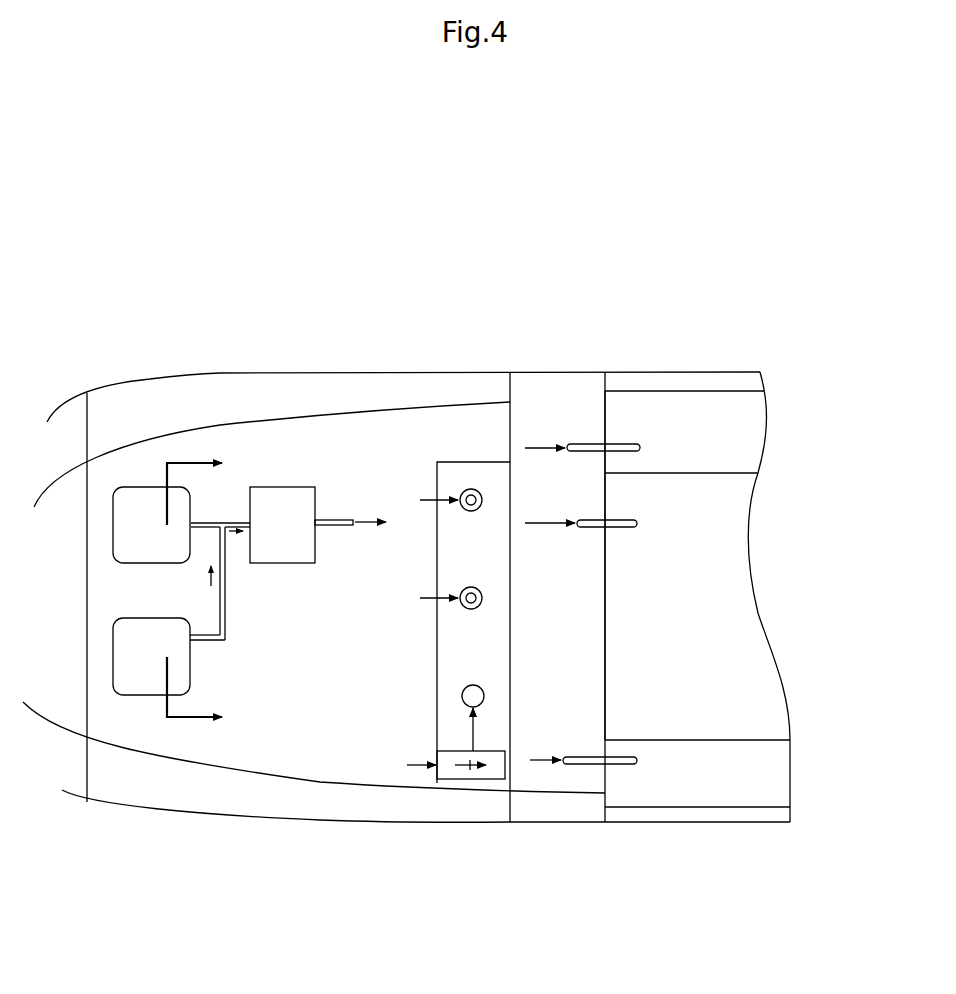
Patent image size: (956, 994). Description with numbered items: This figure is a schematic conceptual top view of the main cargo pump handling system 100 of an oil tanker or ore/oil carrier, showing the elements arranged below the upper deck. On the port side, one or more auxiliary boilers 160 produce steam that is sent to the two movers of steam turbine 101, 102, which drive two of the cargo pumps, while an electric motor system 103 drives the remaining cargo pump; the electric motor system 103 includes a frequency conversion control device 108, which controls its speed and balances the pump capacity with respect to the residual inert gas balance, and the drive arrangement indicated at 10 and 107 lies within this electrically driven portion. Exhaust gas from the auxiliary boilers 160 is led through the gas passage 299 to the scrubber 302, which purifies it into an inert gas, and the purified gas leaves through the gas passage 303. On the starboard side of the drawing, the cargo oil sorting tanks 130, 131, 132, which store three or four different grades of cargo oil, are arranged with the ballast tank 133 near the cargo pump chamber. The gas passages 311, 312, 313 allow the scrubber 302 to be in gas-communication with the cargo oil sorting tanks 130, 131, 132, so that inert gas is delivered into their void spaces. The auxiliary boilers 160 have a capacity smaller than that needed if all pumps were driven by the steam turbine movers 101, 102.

The main cargo pump handling system 100 is at (457, 360).
The process unit 10 is at (410, 636).
The mover of steam turbine 101 is at (472, 488).
The mover of steam turbine 102 is at (472, 610).
The electric motor system 103 is at (462, 696).
The purge gas flow arrow 107 is at (475, 770).
The frequency conversion control device 108 is at (455, 775).
The cargo oil sorting tank 130 is at (722, 418).
The cargo oil sorting tank 131 is at (740, 772).
The cargo oil sorting tank 132 is at (710, 547).
The ballast tank 133 is at (697, 386).
The auxiliary boiler 160 is at (128, 535).
The gas passage 299 is at (233, 521).
The scrubber 302 is at (278, 497).
The gas passage 303 is at (340, 518).
The gas passage 311 is at (587, 443).
The gas passage 312 is at (589, 528).
The gas passage 313 is at (583, 757).